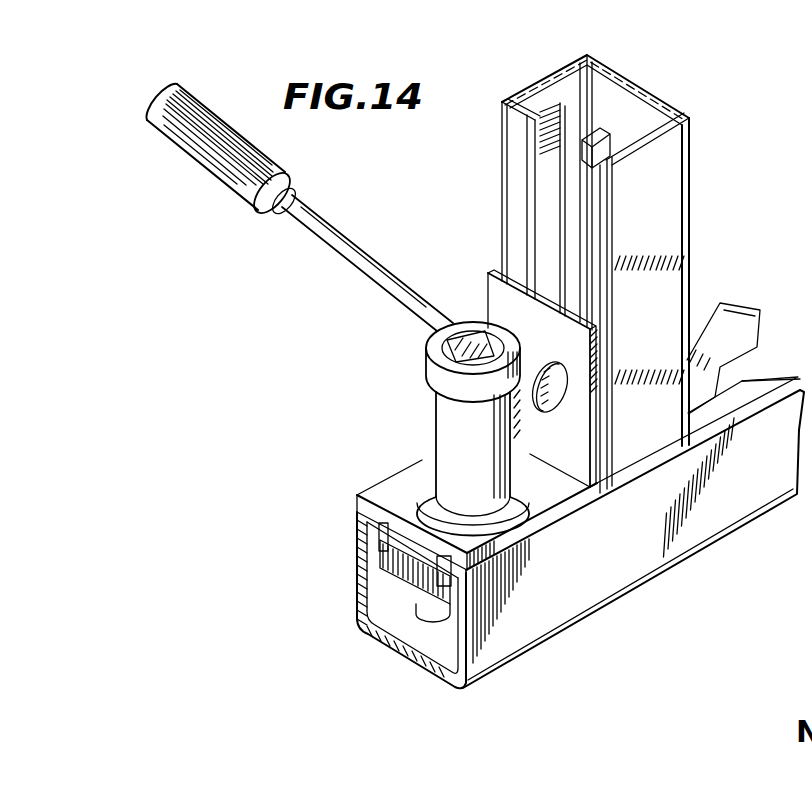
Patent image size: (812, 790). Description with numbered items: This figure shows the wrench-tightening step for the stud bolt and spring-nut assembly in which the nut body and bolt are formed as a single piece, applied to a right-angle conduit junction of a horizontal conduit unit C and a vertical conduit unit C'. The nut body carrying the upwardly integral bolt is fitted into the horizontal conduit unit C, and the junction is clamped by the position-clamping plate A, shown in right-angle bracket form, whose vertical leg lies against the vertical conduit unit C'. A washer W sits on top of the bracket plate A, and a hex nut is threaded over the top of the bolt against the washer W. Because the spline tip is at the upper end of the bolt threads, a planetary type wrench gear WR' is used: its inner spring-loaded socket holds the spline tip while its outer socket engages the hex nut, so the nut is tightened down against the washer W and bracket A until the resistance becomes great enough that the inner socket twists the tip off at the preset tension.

The horizontal conduit unit C is at (580, 495).
The vertical conduit unit C' is at (614, 274).
The position-clamping plate A is at (402, 493).
The washer W is at (533, 480).
The planetary type wrench gear WR' is at (338, 310).